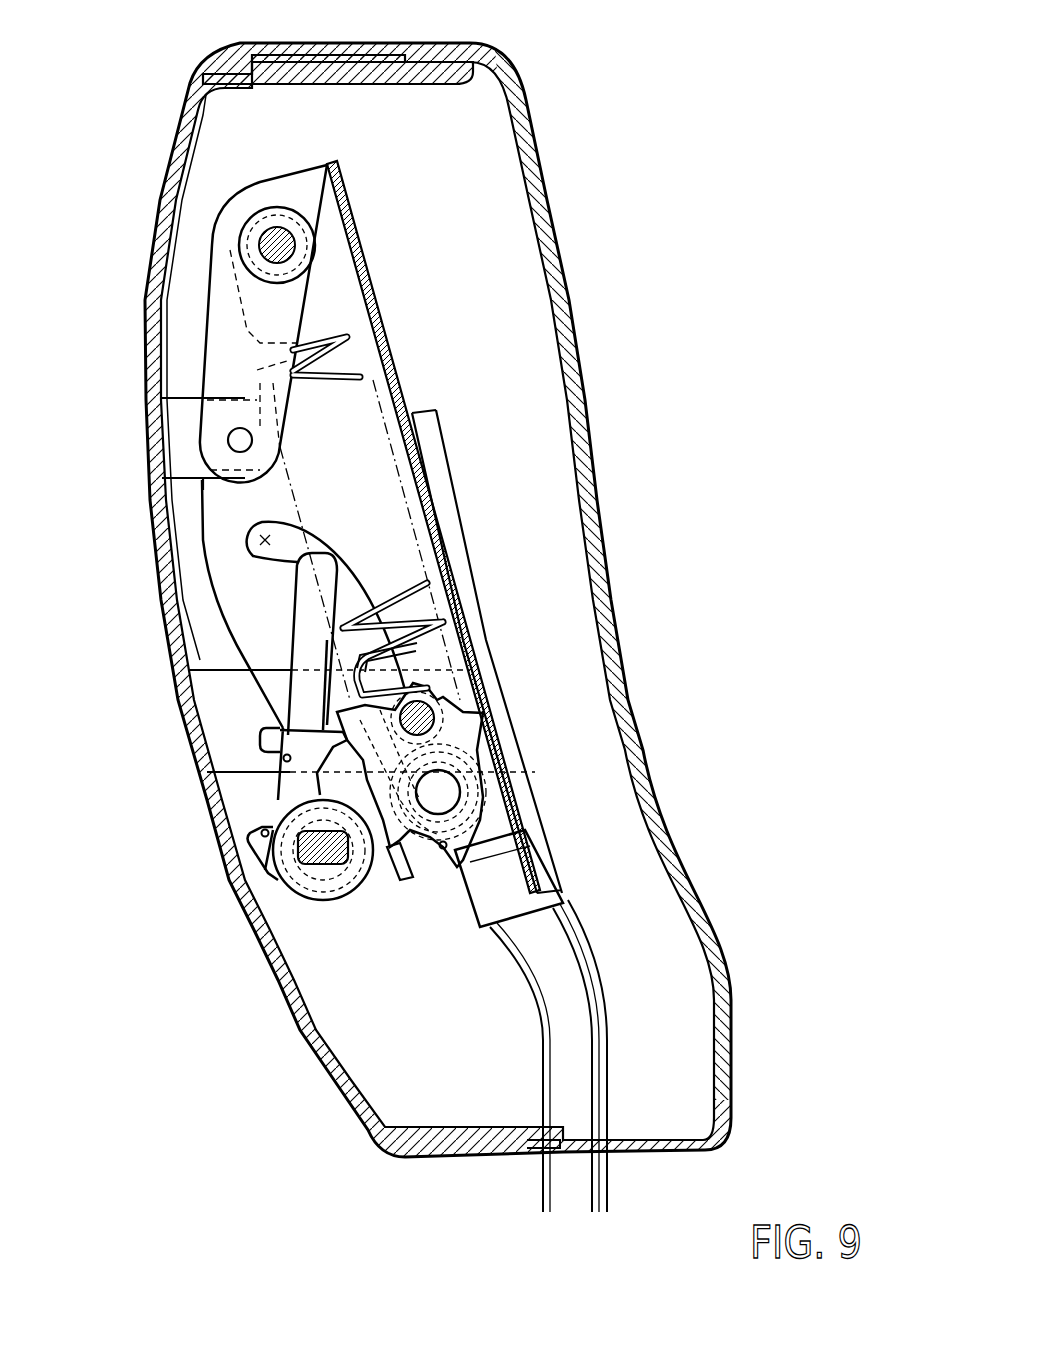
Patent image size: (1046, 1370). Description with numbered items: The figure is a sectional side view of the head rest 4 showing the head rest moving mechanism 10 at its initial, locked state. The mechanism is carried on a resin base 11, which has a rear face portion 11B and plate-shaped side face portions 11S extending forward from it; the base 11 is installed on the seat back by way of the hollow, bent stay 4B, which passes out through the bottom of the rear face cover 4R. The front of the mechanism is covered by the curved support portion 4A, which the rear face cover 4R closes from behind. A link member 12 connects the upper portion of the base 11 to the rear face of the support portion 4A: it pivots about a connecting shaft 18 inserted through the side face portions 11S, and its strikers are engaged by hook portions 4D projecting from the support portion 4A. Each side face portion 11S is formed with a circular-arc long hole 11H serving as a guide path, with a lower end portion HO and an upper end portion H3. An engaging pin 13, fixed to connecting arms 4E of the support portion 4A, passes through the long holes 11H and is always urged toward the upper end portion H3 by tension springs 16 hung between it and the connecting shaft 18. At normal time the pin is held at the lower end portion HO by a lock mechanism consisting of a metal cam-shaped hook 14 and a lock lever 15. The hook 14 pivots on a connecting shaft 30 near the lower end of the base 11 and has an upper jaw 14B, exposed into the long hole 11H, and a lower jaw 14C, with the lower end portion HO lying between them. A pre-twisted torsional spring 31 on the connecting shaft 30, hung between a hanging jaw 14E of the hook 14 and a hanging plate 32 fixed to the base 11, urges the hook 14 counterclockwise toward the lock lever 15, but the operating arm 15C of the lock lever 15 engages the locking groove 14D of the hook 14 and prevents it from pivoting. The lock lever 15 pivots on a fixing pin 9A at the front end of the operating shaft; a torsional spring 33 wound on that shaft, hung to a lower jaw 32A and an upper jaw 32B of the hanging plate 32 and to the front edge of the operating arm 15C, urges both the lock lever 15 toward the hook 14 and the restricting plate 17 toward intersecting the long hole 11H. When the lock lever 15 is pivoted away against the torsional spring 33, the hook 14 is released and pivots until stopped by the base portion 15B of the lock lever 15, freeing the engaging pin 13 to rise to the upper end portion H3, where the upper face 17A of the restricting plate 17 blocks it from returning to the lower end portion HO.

The head rest 4 is at (530, 45).
The support portion 4A is at (150, 237).
The rear face cover 4R is at (555, 205).
The hook portion 4D is at (182, 425).
The connecting arm 4E is at (260, 688).
The stay 4B is at (580, 1010).
The fixing pin 9A is at (316, 850).
The head rest moving mechanism 10 is at (478, 495).
The base 11 is at (338, 168).
The side face portion 11S is at (330, 276).
The rear face portion 11B is at (452, 603).
The long hole 11H is at (250, 548).
The link member 12 is at (238, 340).
The engaging pin 13 is at (440, 668).
The hook 14 is at (482, 827).
The upper jaw 14B is at (415, 700).
The lower jaw 14C is at (478, 707).
The locking groove 14D is at (325, 575).
The hanging jaw 14E is at (498, 855).
The lock lever 15 is at (287, 783).
The base portion 15B is at (328, 878).
The operating arm 15C is at (283, 757).
The tension spring 16 is at (362, 377).
The restricting plate 17 is at (258, 690).
The upper face 17A is at (330, 600).
The connecting shaft 18 is at (282, 248).
The connecting shaft 30 is at (432, 850).
The torsional spring 31 is at (442, 790).
The hanging plate 32 is at (475, 747).
The lower jaw 32A is at (272, 845).
The upper jaw 32B is at (262, 738).
The torsional spring 33 is at (260, 835).
The upper end portion H3 is at (262, 540).
The lower end portion HO is at (490, 705).